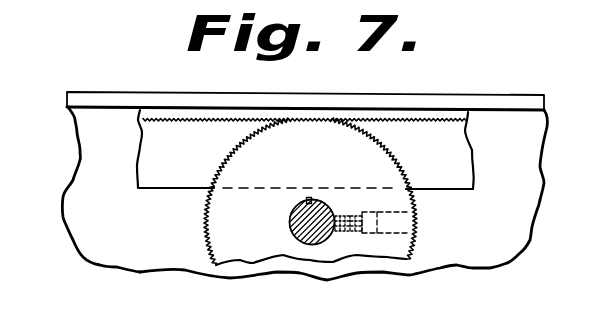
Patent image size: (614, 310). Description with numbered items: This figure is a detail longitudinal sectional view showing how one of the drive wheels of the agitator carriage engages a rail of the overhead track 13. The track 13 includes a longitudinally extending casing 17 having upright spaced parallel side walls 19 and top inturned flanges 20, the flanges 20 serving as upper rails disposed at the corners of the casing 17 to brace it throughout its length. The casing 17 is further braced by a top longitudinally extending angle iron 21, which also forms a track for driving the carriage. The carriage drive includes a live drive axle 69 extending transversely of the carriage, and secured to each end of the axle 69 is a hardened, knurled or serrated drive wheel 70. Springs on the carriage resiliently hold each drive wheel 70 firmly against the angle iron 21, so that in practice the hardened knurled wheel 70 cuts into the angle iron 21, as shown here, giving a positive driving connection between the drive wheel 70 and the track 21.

The overhead track 13 is at (503, 152).
The casing 17 is at (522, 208).
The side walls 19 is at (500, 238).
The top inturned flanges 20 is at (526, 102).
The angle irons 21 is at (448, 133).
The live drive axle 69 is at (316, 212).
The knurled drive wheels 70 is at (382, 170).